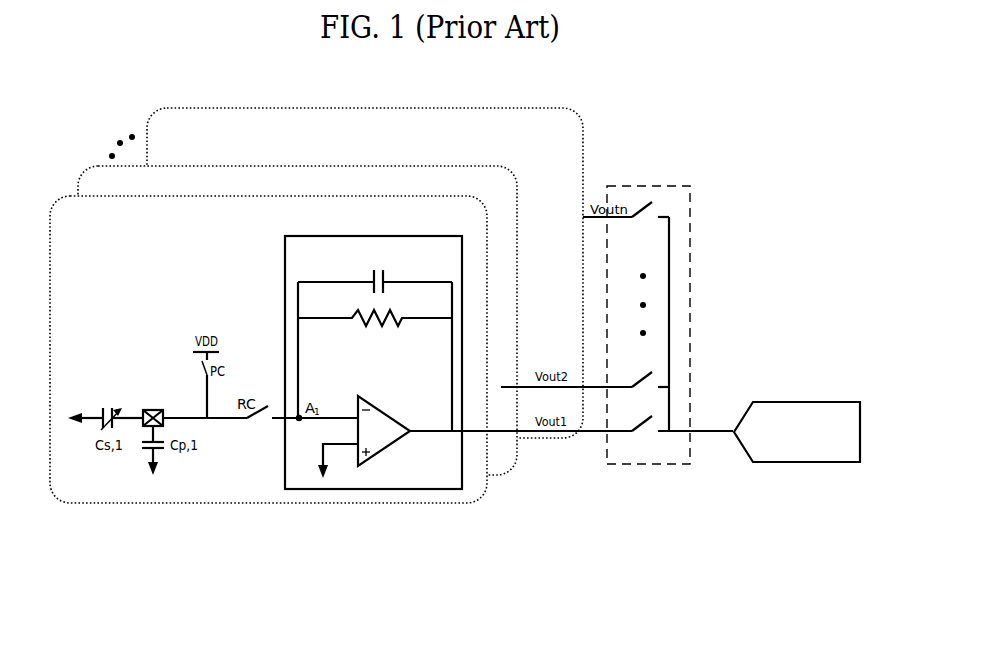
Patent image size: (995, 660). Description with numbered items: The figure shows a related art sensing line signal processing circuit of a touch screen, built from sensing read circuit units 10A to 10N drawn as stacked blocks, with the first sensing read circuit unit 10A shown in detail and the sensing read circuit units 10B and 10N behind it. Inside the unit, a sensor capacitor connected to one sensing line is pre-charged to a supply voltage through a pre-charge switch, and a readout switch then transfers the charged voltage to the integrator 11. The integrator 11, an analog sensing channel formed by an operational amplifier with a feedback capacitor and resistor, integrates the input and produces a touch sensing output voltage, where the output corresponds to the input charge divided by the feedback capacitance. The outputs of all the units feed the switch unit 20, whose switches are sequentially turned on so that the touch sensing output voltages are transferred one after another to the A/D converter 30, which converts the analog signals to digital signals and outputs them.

The sensing read circuit unit 10A is at (268, 349).
The sensing read circuit unit 10B is at (297, 320).
The sensing read circuit unit 10N is at (365, 273).
The integrator 11 is at (413, 489).
The switch unit 20 is at (690, 213).
The A/D converter 30 is at (793, 462).